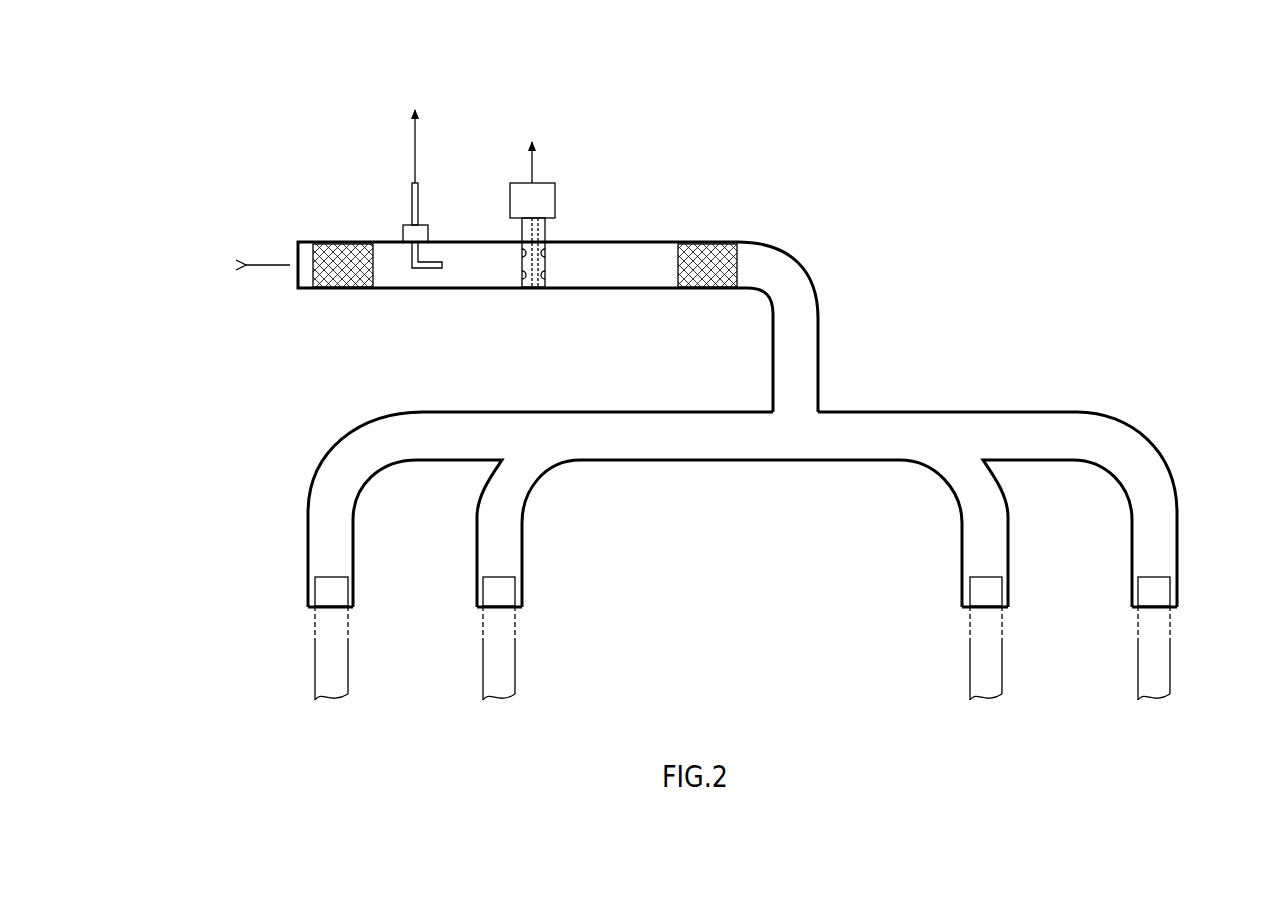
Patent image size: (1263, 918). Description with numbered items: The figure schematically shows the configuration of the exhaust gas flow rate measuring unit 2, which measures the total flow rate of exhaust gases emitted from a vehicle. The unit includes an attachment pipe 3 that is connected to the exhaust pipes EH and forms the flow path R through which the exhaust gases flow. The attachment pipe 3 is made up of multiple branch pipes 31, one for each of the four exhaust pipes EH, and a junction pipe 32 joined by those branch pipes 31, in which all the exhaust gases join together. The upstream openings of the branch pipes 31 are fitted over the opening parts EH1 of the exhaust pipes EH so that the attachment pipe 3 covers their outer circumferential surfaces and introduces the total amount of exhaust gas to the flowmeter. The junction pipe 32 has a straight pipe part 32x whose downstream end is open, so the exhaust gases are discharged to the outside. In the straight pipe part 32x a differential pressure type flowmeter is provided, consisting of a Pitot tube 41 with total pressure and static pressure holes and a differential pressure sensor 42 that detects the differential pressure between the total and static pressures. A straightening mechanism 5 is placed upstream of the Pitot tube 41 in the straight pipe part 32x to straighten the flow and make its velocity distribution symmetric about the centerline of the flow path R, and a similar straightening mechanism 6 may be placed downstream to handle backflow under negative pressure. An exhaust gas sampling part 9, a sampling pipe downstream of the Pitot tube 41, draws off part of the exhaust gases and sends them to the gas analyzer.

The exhaust gas flow rate measuring unit 2 is at (806, 189).
The attachment pipe 3 is at (728, 462).
The straightening mechanism 5 is at (708, 242).
The straightening mechanism 6 is at (343, 242).
The exhaust gas sampling part 9 is at (425, 269).
The branch pipes 31 is at (306, 553).
The junction pipe 32 is at (822, 340).
The straight pipe part 32x is at (493, 292).
The Pitot tube 41 is at (545, 262).
The differential pressure sensor 42 is at (556, 198).
The flow path R is at (683, 438).
The exhaust pipes EH is at (313, 642).
The opening parts EH1 is at (351, 588).